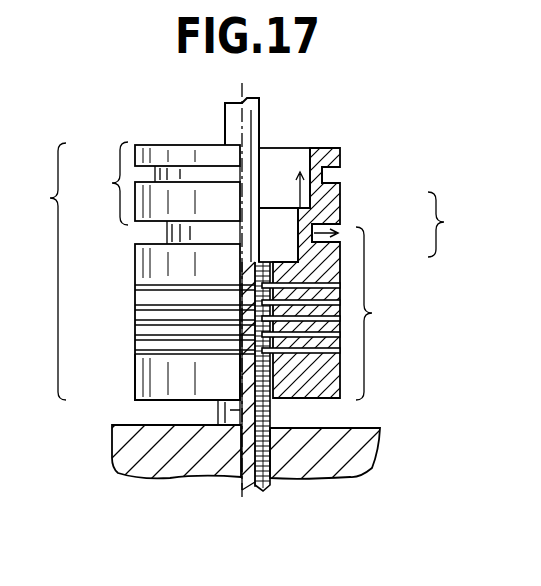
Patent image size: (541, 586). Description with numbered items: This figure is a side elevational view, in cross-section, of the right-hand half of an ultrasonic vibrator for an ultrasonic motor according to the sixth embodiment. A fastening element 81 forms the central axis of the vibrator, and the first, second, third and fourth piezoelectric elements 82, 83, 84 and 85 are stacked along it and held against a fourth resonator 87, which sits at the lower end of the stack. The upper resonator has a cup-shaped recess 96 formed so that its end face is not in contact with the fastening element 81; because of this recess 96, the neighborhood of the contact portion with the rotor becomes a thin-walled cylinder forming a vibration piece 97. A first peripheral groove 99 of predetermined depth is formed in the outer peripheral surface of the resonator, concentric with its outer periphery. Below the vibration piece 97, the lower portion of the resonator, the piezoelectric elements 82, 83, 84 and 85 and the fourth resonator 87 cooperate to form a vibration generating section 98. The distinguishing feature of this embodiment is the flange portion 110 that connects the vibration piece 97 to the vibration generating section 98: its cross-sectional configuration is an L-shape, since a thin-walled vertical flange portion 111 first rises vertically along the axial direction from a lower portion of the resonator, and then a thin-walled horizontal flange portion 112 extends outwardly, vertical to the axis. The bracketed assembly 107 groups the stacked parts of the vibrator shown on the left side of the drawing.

The fastening element 81 is at (238, 120).
The first piezoelectric element 82 is at (143, 293).
The second piezoelectric element 83 is at (143, 312).
The third piezoelectric element 84 is at (143, 327).
The fourth piezoelectric element 85 is at (143, 342).
The fourth resonator 87 is at (143, 387).
The recess 96 is at (287, 158).
The vibration piece 97 is at (155, 183).
The vibration generating section 98 is at (336, 274).
The first peripheral groove 99 is at (328, 177).
The plate stack 107 is at (129, 286).
The flange portion 110 is at (406, 223).
The vertical flange portion 111 is at (334, 243).
The horizontal flange portion 112 is at (330, 230).